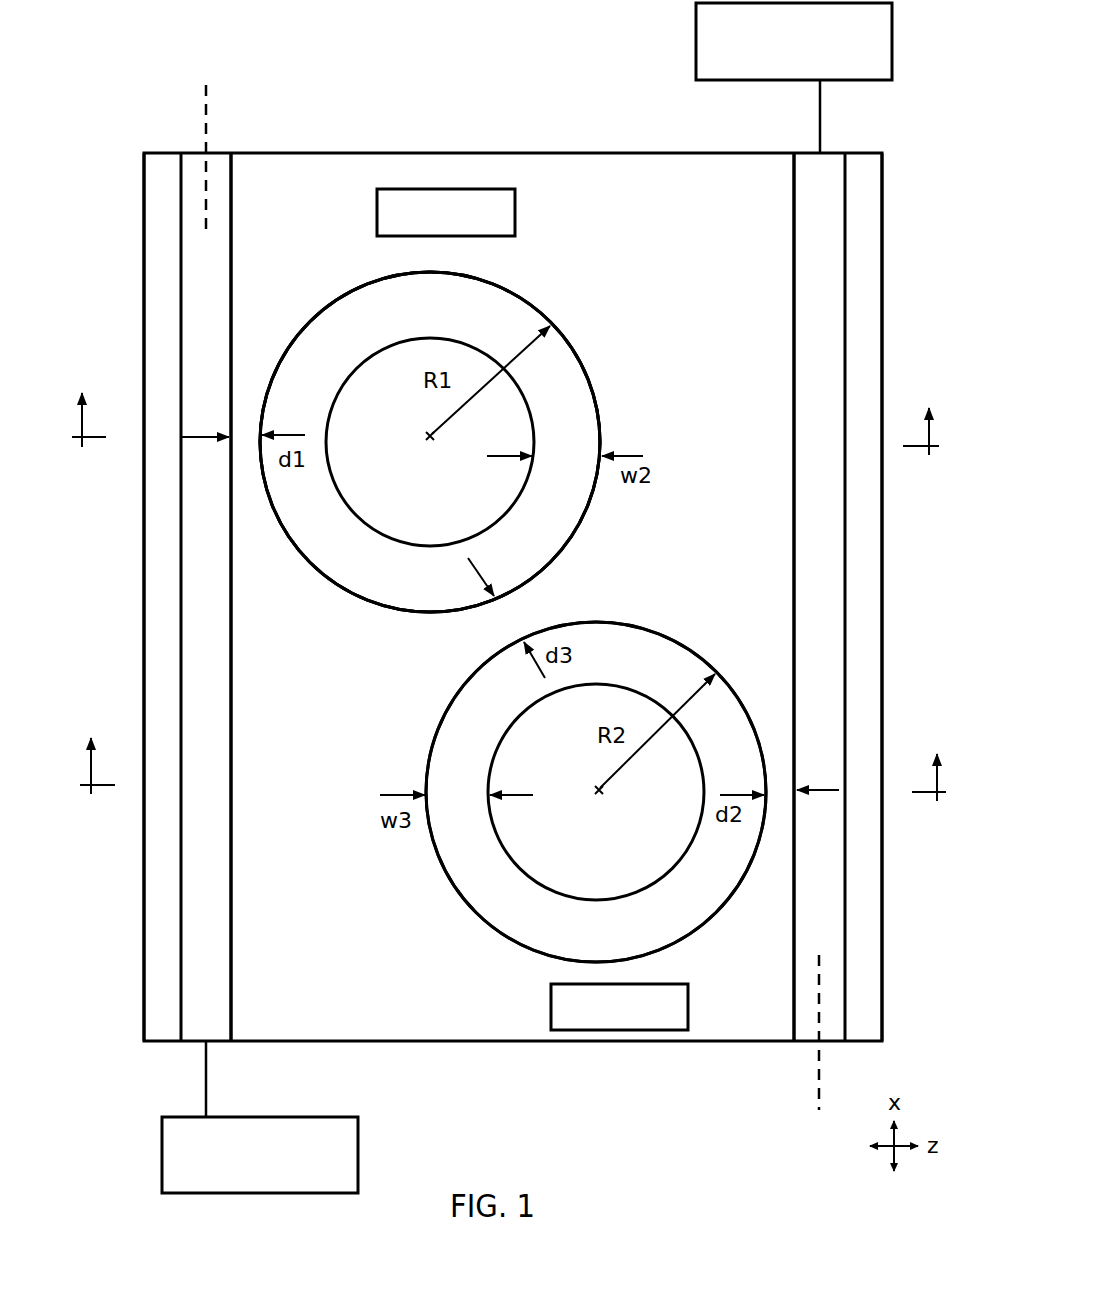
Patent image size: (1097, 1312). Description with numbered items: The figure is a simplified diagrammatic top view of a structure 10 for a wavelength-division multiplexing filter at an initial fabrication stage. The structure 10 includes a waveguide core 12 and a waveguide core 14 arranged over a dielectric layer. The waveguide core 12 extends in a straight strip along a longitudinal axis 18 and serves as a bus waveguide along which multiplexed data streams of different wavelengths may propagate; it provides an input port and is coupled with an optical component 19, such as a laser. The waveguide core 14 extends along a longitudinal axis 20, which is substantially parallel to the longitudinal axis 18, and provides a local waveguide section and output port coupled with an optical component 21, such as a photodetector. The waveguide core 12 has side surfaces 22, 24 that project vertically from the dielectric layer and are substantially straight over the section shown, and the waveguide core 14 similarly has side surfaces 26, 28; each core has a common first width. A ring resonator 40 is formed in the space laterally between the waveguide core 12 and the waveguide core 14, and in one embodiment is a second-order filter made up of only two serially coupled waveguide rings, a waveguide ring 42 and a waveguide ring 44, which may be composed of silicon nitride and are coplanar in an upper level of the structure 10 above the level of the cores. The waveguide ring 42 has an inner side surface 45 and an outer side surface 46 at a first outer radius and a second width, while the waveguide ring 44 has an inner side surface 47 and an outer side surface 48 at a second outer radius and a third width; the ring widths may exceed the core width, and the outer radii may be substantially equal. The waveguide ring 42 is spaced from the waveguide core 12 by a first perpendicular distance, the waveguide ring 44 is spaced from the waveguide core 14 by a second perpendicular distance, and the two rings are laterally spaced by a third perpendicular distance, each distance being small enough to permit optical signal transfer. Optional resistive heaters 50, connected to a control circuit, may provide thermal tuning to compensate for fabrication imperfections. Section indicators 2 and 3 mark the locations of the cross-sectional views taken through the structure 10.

The structure 10 is at (166, 63).
The waveguide core 12 is at (220, 198).
The waveguide core 14 is at (808, 197).
The longitudinal axis 18 is at (205, 109).
The optical component 19 is at (162, 1153).
The longitudinal axis 20 is at (821, 983).
The optical component 21 is at (696, 43).
The side surface 22 is at (180, 983).
The side surface 24 is at (232, 985).
The side surface 26 is at (793, 290).
The side surface 28 is at (840, 292).
The ring resonator 40 is at (571, 284).
The waveguide ring 42 is at (558, 387).
The waveguide ring 44 is at (455, 735).
The inner side surface 45 is at (510, 500).
The outer side surface 46 is at (572, 532).
The inner side surface 47 is at (686, 843).
The outer side surface 48 is at (477, 913).
The resistive heater 50 is at (377, 212).
The section line 2- 2 is at (505, 406).
The section line 3- 3 is at (513, 752).